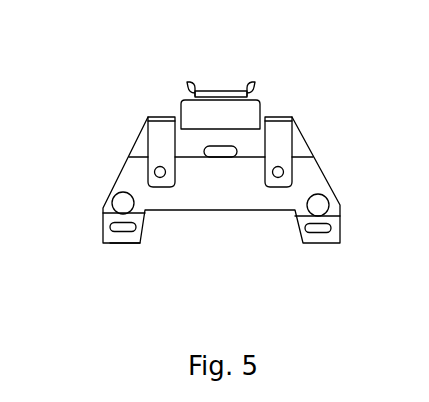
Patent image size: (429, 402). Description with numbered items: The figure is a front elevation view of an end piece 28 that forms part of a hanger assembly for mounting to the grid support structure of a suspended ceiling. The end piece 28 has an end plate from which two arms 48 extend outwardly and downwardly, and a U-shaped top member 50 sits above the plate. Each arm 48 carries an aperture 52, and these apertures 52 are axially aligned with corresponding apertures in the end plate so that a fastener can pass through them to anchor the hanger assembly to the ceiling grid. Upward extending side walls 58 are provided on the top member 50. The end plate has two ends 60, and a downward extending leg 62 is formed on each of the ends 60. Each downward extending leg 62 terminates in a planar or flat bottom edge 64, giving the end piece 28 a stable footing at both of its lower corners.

The end piece 28 is at (89, 120).
The arm 48 is at (280, 132).
The U-shaped top member 50 is at (221, 92).
The aperture 52 is at (283, 170).
The side wall 58 is at (252, 86).
The end 60 is at (101, 228).
The downward extending leg 62 is at (113, 244).
The bottom edge 64 is at (127, 244).